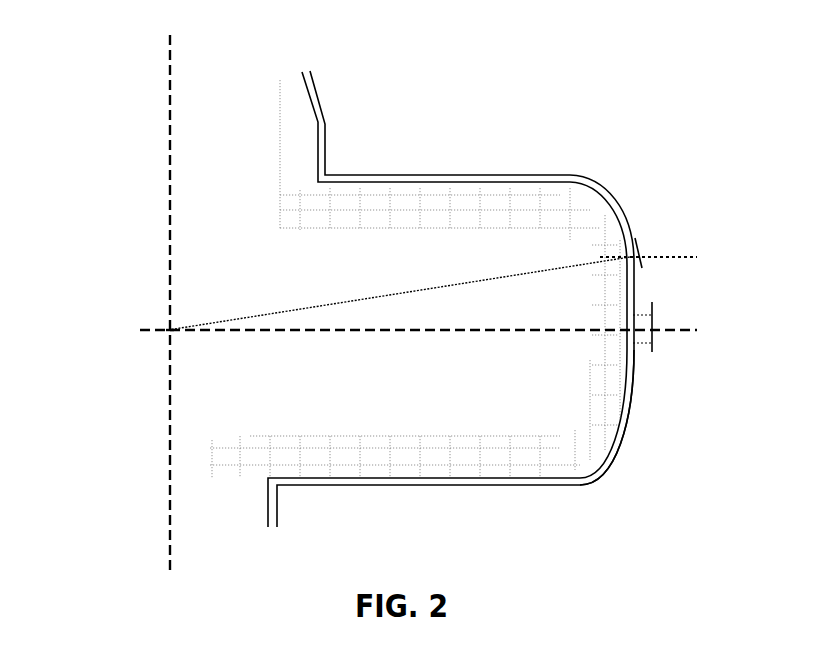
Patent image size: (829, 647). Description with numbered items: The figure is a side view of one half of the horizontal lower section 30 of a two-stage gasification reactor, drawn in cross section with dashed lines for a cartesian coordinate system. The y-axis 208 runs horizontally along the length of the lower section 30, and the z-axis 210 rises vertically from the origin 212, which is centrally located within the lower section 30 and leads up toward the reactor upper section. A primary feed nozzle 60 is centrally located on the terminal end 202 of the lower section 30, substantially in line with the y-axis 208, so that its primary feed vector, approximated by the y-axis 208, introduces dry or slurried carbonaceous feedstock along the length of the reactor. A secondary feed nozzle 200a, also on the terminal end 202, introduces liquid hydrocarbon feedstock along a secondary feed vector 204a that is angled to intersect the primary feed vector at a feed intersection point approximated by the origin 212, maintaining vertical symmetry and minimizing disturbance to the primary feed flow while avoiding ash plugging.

The lower section 30 is at (549, 105).
The primary feed nozzle 60 is at (663, 342).
The secondary feed nozzle 200a is at (647, 238).
The terminal end 202 is at (630, 423).
The secondary feed vector 204a is at (374, 290).
The y-axis 208 is at (439, 340).
The z-axis 210 is at (157, 150).
The origin 212 is at (157, 323).